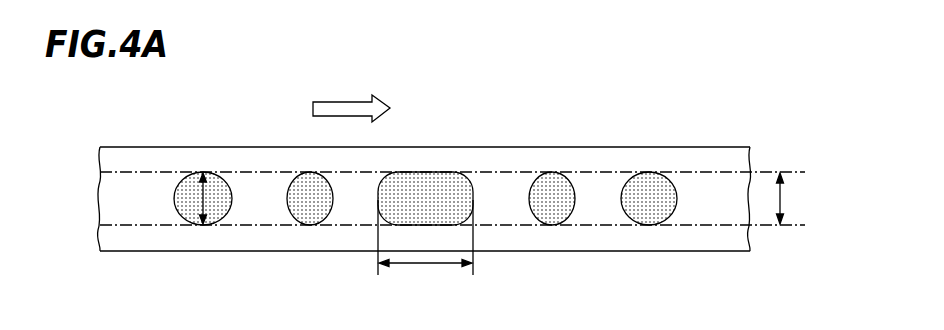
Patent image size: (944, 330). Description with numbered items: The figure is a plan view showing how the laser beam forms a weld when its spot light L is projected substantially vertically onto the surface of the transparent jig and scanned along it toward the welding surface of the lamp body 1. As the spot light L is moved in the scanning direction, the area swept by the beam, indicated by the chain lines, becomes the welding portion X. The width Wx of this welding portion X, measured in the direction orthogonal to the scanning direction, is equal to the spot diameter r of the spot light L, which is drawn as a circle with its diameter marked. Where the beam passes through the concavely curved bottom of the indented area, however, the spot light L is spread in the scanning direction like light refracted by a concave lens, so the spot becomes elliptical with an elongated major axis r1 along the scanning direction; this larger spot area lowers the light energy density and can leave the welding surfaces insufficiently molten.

The lamp body 1 is at (690, 156).
The welding portion X is at (150, 187).
The spot light L is at (295, 172).
The spot diameter r is at (204, 200).
The major axis r1 is at (425, 252).
The width of the welding portion Wx is at (811, 198).